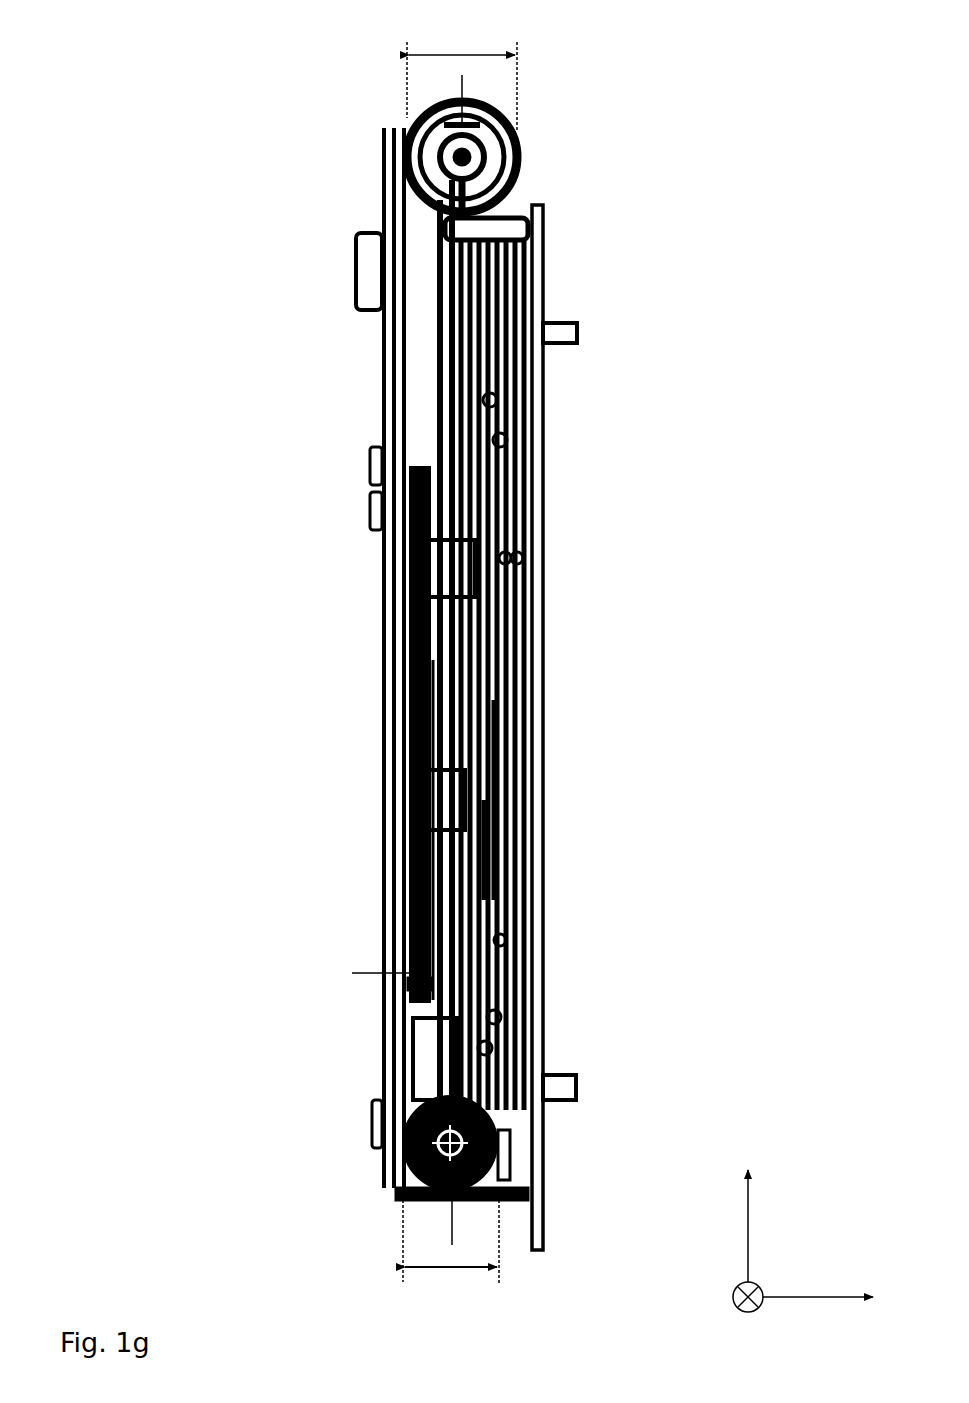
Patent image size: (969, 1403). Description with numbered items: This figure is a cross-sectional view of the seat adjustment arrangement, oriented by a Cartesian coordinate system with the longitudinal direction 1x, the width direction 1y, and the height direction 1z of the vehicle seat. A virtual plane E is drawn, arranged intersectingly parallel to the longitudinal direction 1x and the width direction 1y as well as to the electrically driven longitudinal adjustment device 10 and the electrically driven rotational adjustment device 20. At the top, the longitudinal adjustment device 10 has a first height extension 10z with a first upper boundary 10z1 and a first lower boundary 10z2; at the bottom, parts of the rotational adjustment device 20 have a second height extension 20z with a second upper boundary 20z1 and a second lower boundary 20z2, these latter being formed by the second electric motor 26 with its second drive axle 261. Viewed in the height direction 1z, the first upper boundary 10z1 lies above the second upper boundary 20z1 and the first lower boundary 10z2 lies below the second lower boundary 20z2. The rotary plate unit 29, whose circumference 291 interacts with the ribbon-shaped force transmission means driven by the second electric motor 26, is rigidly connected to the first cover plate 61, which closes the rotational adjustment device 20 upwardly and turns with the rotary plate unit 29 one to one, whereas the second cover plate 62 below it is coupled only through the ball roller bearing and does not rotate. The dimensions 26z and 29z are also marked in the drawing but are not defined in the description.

The longitudinal adjustment device 10 is at (524, 128).
The first height extension 10z is at (452, 52).
The first upper boundary 10z1 is at (405, 65).
The first lower boundary 10z2 is at (519, 65).
The virtual plane E is at (462, 80).
The rotational adjustment device 20 is at (383, 1214).
The second electric motor 26 is at (522, 1160).
The second drive axle 261 is at (372, 1132).
The rotary plate unit 29 is at (408, 695).
The circumference 291 is at (408, 905).
The guide rail width 29z is at (380, 988).
The first cover plate 61 is at (541, 268).
The second cover plate 62 is at (488, 845).
The second upper boundary 20z1 is at (402, 1262).
The second lower boundary 20z2 is at (500, 1218).
The hinge pin width 26z is at (452, 1268).
The second height extension 20z is at (451, 1305).
The longitudinal direction 1x is at (818, 1296).
The width direction 1y is at (738, 1312).
The height direction 1z is at (746, 1222).